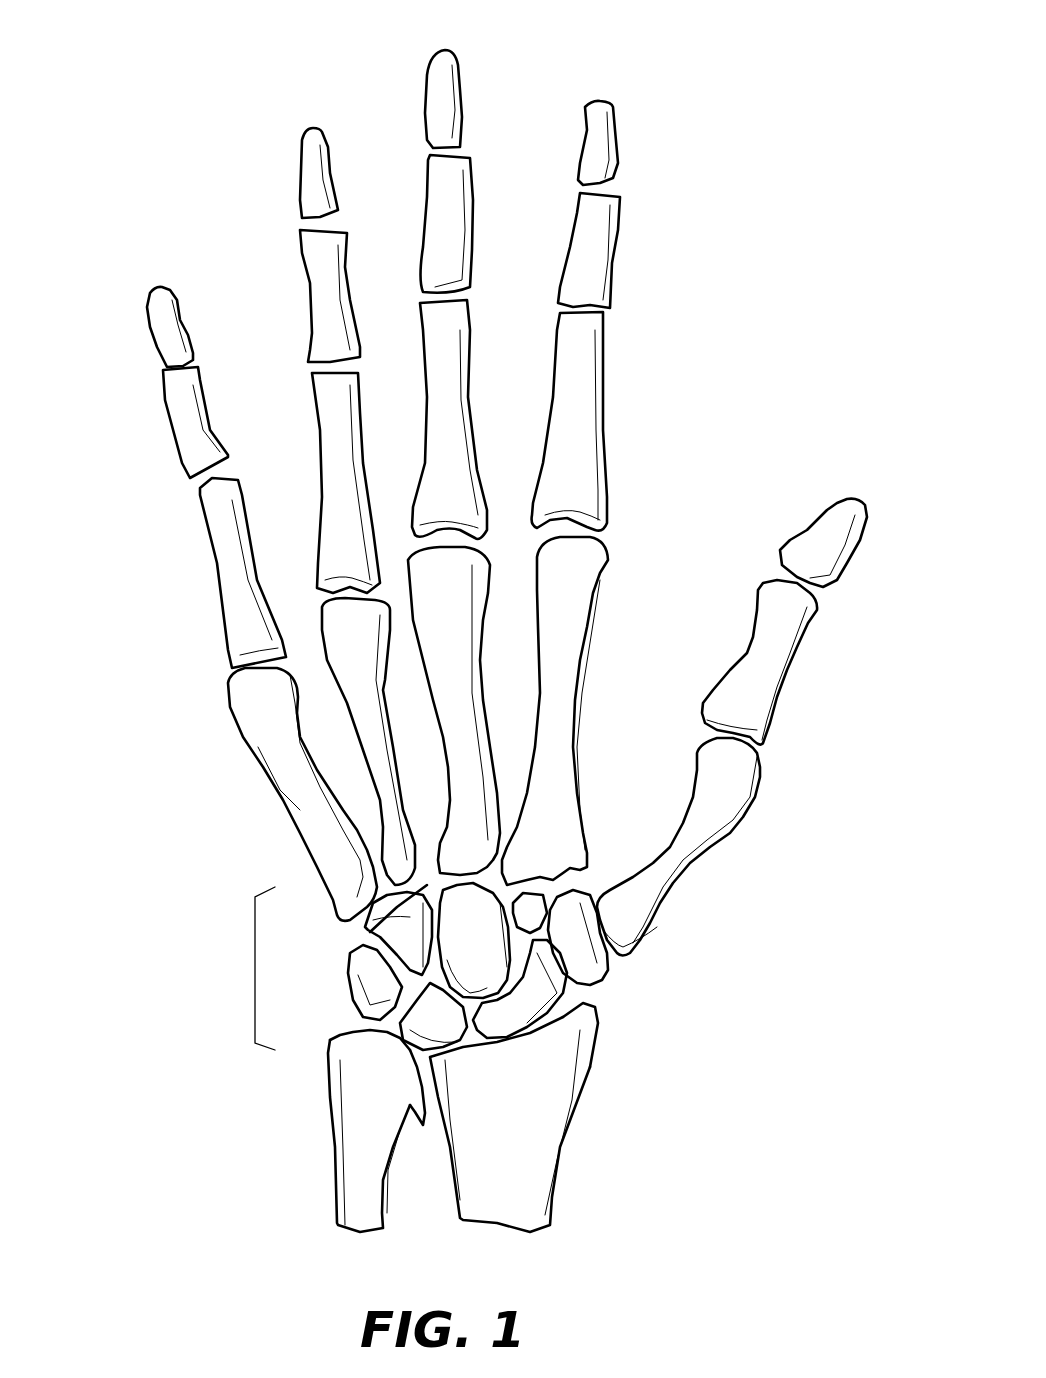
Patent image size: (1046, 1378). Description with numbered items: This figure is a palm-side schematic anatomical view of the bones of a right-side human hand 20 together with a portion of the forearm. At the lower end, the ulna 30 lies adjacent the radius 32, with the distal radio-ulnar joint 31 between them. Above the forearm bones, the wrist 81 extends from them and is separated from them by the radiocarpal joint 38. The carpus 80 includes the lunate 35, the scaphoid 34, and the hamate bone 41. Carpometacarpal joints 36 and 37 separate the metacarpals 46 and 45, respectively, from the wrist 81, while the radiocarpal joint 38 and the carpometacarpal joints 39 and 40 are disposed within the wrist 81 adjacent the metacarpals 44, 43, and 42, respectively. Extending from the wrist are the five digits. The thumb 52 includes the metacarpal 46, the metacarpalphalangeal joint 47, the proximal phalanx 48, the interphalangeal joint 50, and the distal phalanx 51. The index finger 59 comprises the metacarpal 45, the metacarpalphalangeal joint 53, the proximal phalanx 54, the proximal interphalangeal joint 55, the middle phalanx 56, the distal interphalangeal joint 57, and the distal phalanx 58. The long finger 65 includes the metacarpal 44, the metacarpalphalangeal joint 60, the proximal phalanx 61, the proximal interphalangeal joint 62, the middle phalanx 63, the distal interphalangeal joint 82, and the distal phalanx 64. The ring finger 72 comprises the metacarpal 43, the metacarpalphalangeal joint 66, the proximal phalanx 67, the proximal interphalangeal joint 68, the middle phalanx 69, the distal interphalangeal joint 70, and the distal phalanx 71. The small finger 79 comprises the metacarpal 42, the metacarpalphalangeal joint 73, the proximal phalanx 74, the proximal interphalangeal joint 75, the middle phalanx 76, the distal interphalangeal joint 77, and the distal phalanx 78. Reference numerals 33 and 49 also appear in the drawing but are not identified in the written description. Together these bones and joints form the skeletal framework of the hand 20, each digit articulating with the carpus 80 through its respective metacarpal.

The right side human hand 20 is at (788, 279).
The ulna 30 is at (350, 1192).
The distal radio ulnar joint 31 is at (418, 1092).
The radius 32 is at (572, 1097).
The radial styloid process 33 is at (585, 1030).
The scaphoid 34 is at (563, 1008).
The lunate 35 is at (347, 1031).
The carpometacarpal joint 36 is at (617, 953).
The carpometacarpal joint 37 is at (587, 875).
The radiocarpal joint 38 is at (455, 863).
The carpometacarpal joint 39 is at (398, 870).
The carpometacarpal joint 40 is at (353, 930).
The hamate bone 41 is at (370, 932).
The metacarpal 42 is at (307, 827).
The metacarpal 43 is at (383, 777).
The metacarpal 44 is at (463, 757).
The metacarpal 45 is at (563, 725).
The metacarpal 46 is at (693, 848).
The metacarpalphalangeal joint 47 is at (760, 752).
The proximal phalanx 48 is at (772, 668).
The metacarpophalangeal joint of thumb 49 is at (747, 658).
The interphalangeal joint 50 is at (815, 592).
The distal phalanx 51 is at (843, 562).
The thumb 52 is at (850, 500).
The metacarpalphalangeal joint 53 is at (593, 537).
The proximal phalanx 54 is at (587, 437).
The proximal interphalangeal joint 55 is at (610, 310).
The middle phalanx 56 is at (597, 272).
The distal interphalangeal joint 57 is at (612, 185).
The distal phalanx 58 is at (608, 140).
The index finger 59 is at (600, 102).
The metacarpalphalangeal joint 60 is at (427, 547).
The proximal phalanx 61 is at (425, 468).
The proximal interphalangeal joint 62 is at (425, 293).
The middle phalanx 63 is at (428, 257).
The distal phalanx 64 is at (428, 123).
The long finger 65 is at (442, 50).
The metacarpalphalangeal joint 66 is at (330, 598).
The proximal phalanx 67 is at (333, 460).
The proximal interphalangeal joint 68 is at (308, 362).
The middle phalanx 69 is at (317, 305).
The distal interphalangeal joint 70 is at (300, 222).
The distal phalanx 71 is at (310, 200).
The ring finger 72 is at (313, 128).
The metacarpalphalangeal joint 73 is at (230, 673).
The proximal phalanx 74 is at (230, 635).
The proximal interphalangeal joint 75 is at (200, 487).
The middle phalanx 76 is at (190, 458).
The distal interphalangeal joint 77 is at (163, 377).
The distal phalanx 78 is at (160, 337).
The small finger 79 is at (160, 287).
The carpus 80 is at (229, 912).
The wrist 81 is at (253, 965).
The distal interphalangeal joint 82 is at (468, 148).